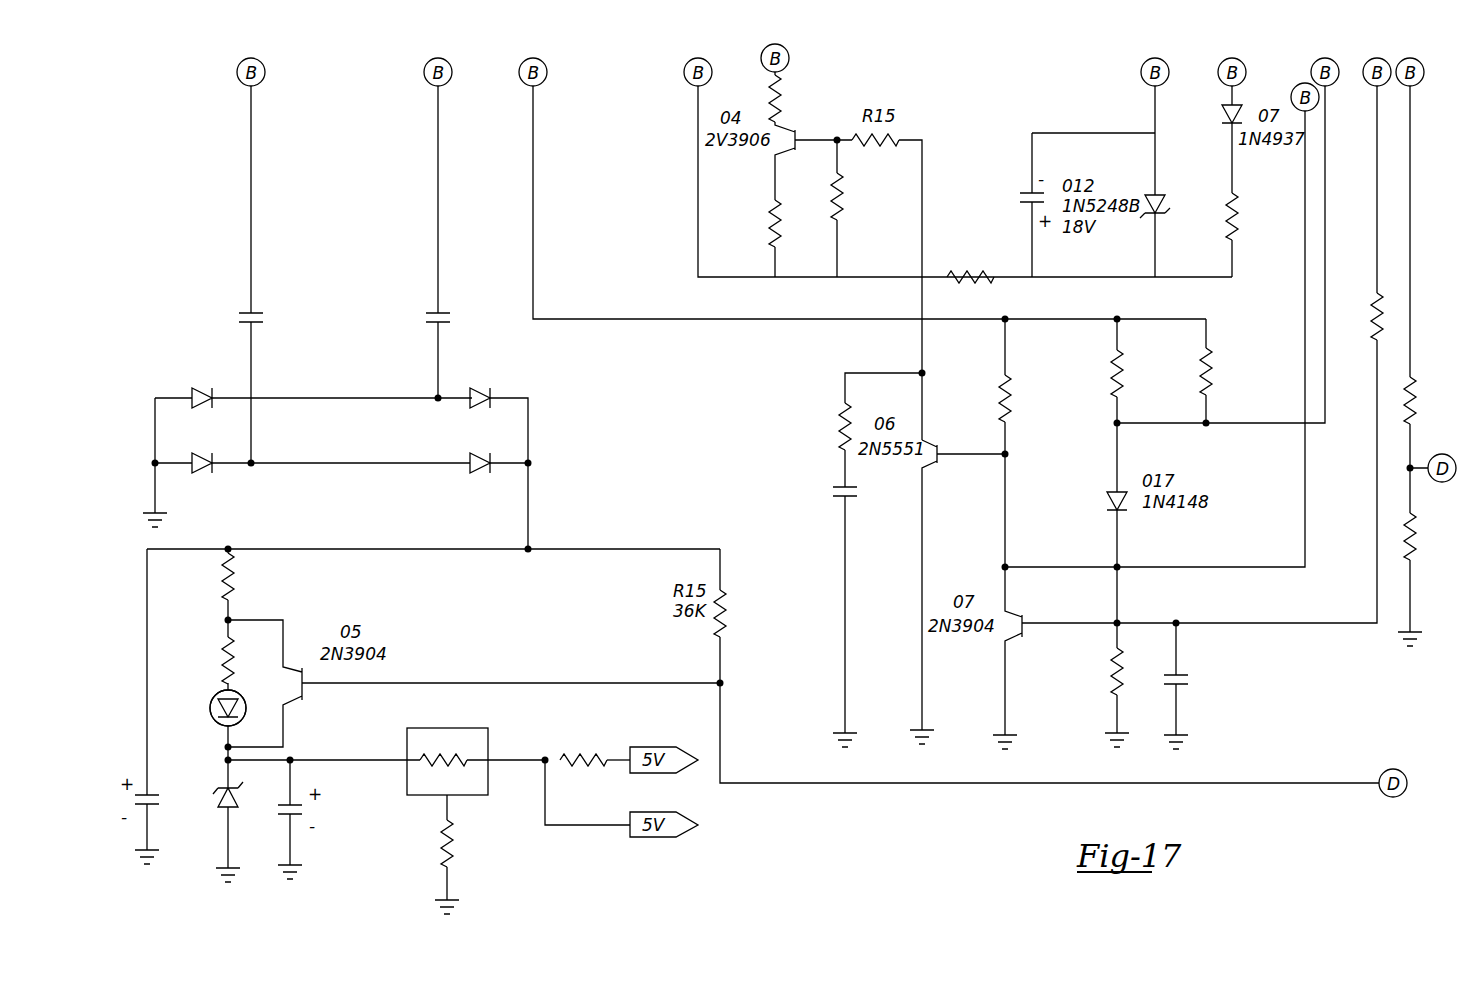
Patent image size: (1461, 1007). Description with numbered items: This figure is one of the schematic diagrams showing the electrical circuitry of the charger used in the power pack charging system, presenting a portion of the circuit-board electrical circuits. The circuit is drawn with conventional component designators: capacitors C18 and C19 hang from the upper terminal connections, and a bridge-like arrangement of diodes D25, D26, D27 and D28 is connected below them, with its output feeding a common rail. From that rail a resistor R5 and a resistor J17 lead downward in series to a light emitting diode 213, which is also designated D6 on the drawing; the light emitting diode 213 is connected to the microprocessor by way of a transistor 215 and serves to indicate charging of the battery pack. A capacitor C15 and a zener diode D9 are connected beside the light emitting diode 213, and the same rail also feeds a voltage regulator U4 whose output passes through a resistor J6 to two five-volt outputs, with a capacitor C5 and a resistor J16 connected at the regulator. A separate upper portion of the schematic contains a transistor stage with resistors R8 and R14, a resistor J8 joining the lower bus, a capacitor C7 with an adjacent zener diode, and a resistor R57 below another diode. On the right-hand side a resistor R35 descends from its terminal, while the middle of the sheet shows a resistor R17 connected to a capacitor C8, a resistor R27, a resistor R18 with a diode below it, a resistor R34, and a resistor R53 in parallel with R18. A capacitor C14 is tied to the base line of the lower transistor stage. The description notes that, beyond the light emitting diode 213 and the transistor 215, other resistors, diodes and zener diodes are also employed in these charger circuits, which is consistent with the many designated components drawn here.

The light emitting diode 213 is at (185, 665).
The transistor 215 is at (293, 656).
The capacitor C18 is at (272, 274).
The capacitor C19 is at (459, 242).
The diode D25 is at (206, 379).
The diode D26 is at (485, 376).
The diode D27 is at (206, 443).
The diode D28 is at (485, 442).
The capacitor C15 is at (176, 830).
The resistor R5 is at (243, 583).
The resistor J17 is at (210, 660).
The LED D6 is at (208, 703).
The zener diode D9 is at (245, 814).
The voltage regulator U4 is at (447, 740).
The resistor J6 is at (583, 747).
The capacitor C5 is at (331, 811).
The resistor J16 is at (464, 843).
The resistor R8 is at (796, 220).
The resistor R14 is at (864, 196).
The resistor J8 is at (970, 265).
The capacitor C7 is at (1013, 191).
The resistor R57 is at (1256, 224).
The resistor R35 is at (1358, 316).
The resistor R17 is at (825, 426).
The capacitor C8 is at (819, 487).
The resistor R27 is at (1035, 395).
The resistor R18 is at (1143, 373).
The resistor R34 is at (1098, 670).
The resistor R53 is at (1227, 369).
The capacitor C14 is at (1210, 683).